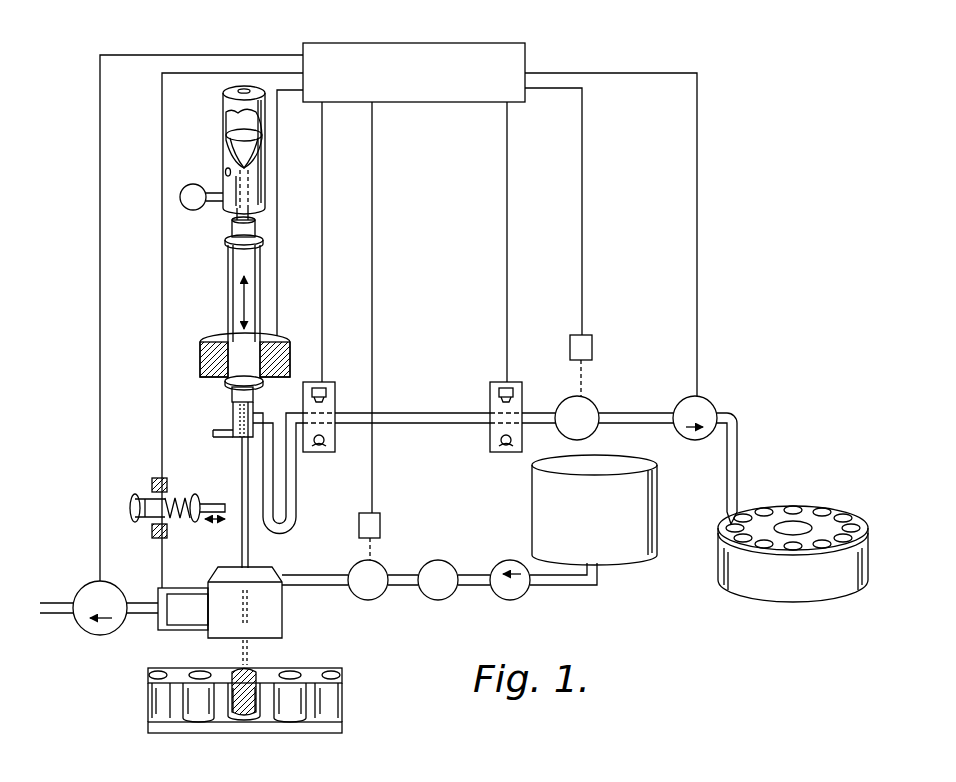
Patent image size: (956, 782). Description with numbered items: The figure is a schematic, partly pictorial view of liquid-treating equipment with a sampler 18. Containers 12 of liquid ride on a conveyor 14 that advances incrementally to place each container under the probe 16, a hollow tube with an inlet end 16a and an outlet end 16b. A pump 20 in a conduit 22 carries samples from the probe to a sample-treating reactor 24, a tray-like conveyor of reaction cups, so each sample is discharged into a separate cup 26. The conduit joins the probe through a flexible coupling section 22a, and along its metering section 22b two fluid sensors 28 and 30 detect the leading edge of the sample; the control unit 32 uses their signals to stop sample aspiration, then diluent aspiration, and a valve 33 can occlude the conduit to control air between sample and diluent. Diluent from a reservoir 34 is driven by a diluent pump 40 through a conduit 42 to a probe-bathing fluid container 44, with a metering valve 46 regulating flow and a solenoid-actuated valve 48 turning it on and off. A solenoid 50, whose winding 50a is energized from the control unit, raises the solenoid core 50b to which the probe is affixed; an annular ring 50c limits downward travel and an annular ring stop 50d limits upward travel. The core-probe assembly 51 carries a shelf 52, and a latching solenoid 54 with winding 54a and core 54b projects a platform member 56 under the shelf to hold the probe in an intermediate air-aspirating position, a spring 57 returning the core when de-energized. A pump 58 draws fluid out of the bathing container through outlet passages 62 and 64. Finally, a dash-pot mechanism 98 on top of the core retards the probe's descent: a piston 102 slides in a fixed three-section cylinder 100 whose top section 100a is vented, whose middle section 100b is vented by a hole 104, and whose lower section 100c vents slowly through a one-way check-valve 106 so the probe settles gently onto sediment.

The containers 12 is at (200, 708).
The conveyor 14 is at (260, 700).
The probe 16 is at (249, 548).
The inlet end 16a is at (251, 650).
The outlet end 16b is at (240, 413).
The sampler 18 is at (242, 305).
The pump 20 is at (705, 398).
The conduit 22 is at (637, 413).
The coupling section 22a is at (290, 493).
The metering section 22b is at (428, 413).
The sample-treating reactor 24 is at (783, 520).
The cup 26 is at (837, 518).
The fluid sensor 28 is at (323, 382).
The fluid sensor 30 is at (522, 400).
The control unit 32 is at (436, 103).
The valve 33 is at (592, 400).
The reservoir 34 is at (622, 560).
The diluent pump 40 is at (507, 560).
The conduit 42 is at (562, 585).
The probe-bathing fluid container 44 is at (208, 575).
The metering valve 46 is at (440, 560).
The solenoid-actuated valve 48 is at (379, 562).
The solenoid 50 is at (242, 305).
The solenoid winding 50a is at (276, 344).
The solenoid core 50b is at (232, 229).
The annular ring 50c is at (226, 245).
The annular ring stop 50d is at (231, 383).
The assembly 51 is at (263, 405).
The shelf 52 is at (235, 432).
The latching solenoid 54 is at (134, 490).
The winding 54a is at (158, 478).
The solenoid core 54b is at (138, 497).
The platform member 56 is at (213, 502).
The spring 57 is at (184, 517).
The pump 58 is at (83, 590).
The outlet passage 62 is at (157, 610).
The outlet passage 64 is at (164, 630).
The dash-pot mechanism 98 is at (222, 125).
The three-section cylinder 100 is at (229, 144).
The cylinder top section 100a is at (228, 110).
The cylinder middle section 100b is at (228, 152).
The cylinder lower section 100c is at (232, 188).
The piston 102 is at (255, 137).
The hole 104 is at (228, 172).
The one-way check-valve 106 is at (185, 189).